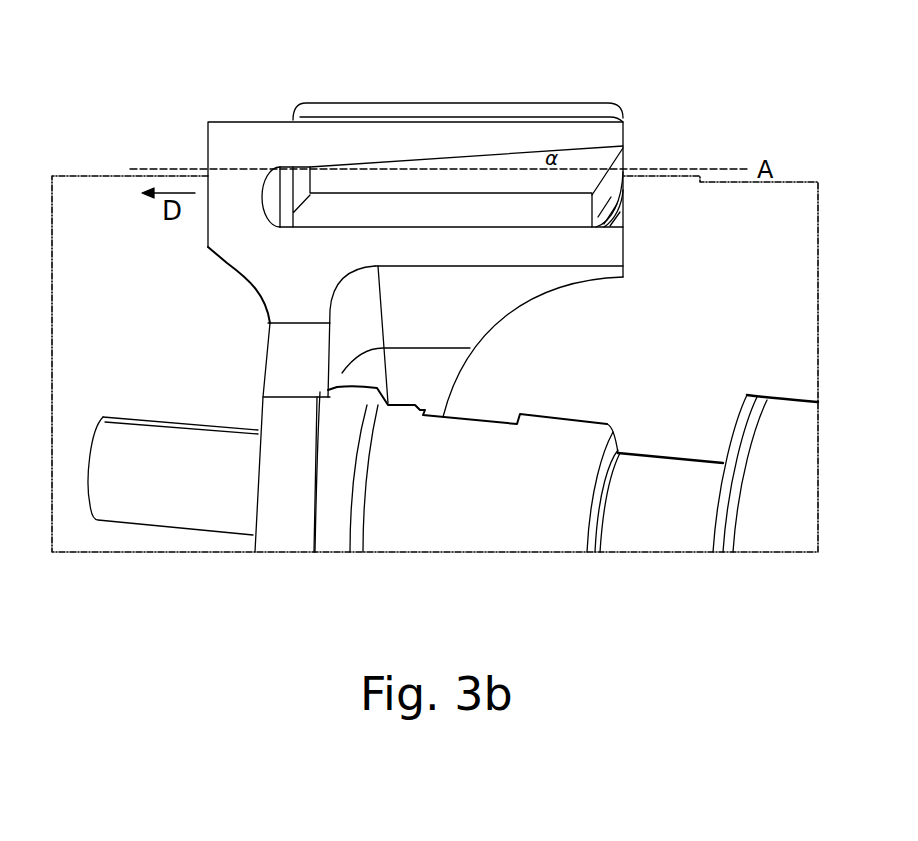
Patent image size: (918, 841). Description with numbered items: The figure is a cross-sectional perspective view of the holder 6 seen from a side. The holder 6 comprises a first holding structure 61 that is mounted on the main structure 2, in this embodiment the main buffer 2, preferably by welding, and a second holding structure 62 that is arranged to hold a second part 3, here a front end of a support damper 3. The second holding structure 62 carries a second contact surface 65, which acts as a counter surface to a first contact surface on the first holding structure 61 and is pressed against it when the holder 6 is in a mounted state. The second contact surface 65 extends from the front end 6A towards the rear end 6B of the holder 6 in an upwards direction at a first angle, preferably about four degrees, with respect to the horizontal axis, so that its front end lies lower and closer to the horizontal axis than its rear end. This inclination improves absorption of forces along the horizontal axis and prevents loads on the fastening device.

The main structure 2 is at (780, 186).
The second part 3 is at (788, 412).
The holder 6 is at (652, 101).
The front end 6A is at (208, 265).
The rear end 6B is at (637, 274).
The first holding structure 61 is at (514, 108).
The second holding structure 62 is at (483, 312).
The second contact surface 65 is at (625, 150).